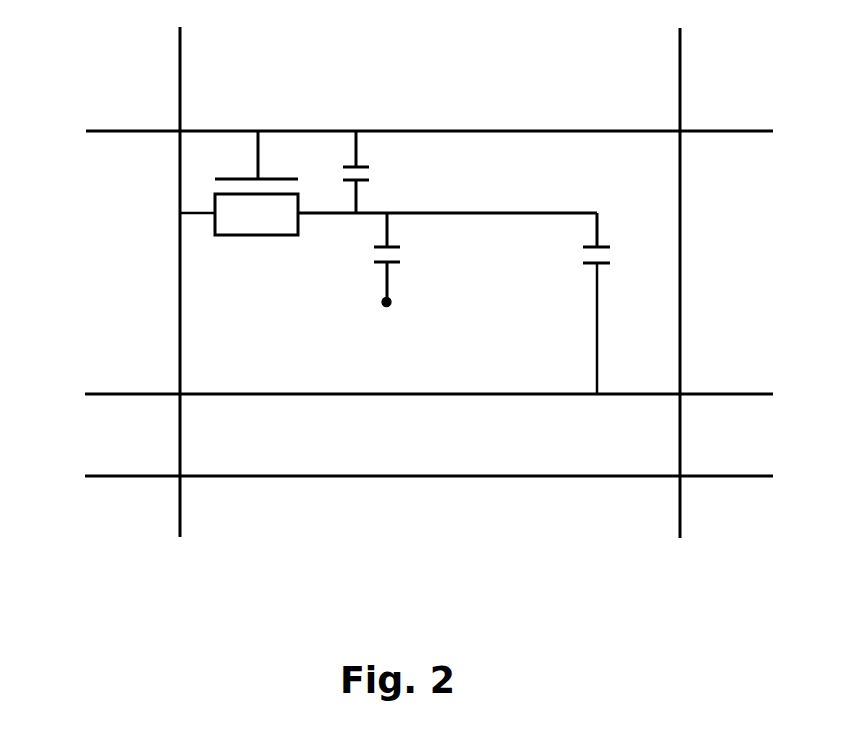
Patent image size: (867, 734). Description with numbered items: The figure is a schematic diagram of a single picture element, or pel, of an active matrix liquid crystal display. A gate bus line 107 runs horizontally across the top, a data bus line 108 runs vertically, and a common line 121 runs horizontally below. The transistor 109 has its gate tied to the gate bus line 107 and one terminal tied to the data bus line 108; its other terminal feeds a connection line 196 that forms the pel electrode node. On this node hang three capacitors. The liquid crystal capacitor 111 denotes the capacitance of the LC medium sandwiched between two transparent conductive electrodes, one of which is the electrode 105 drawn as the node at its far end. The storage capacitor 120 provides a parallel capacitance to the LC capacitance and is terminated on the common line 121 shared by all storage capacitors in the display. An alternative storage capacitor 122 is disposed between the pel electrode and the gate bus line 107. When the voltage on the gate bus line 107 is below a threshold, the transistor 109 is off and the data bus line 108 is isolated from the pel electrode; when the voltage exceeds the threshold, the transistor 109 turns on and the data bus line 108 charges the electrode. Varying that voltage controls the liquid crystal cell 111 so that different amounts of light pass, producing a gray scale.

The transparent conductive electrode 105 is at (386, 306).
The gate bus line 107 is at (400, 132).
The data bus line 108 is at (182, 300).
The transistor 109 is at (268, 228).
The liquid crystal capacitor 111 is at (409, 257).
The storage capacitor 120 is at (605, 243).
The common line 121 is at (404, 392).
The storage capacitor 122 is at (380, 172).
The connection line 196 is at (537, 213).